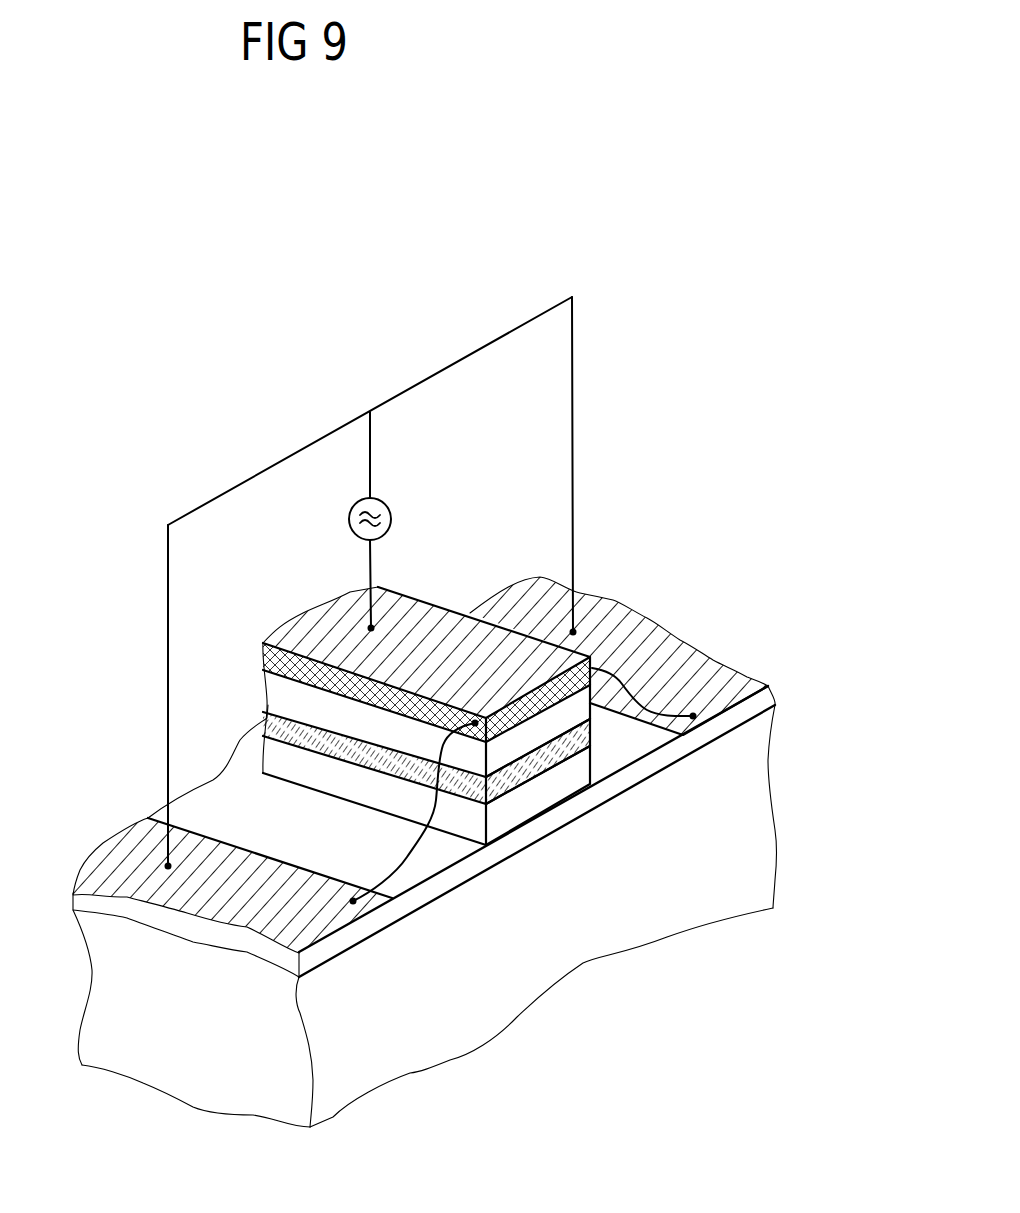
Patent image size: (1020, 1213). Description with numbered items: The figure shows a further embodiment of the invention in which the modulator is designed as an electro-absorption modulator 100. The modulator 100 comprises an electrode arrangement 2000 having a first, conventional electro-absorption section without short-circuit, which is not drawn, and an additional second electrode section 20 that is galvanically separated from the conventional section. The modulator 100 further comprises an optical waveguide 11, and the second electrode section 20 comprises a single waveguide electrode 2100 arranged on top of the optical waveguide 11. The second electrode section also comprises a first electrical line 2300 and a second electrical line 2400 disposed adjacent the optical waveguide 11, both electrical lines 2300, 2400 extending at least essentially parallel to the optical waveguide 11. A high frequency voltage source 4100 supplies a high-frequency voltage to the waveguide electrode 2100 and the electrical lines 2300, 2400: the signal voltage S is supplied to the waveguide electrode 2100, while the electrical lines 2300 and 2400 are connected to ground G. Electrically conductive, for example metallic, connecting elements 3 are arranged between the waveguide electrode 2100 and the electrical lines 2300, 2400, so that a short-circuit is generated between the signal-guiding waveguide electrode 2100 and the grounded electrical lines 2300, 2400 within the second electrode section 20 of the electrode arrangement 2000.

The electro-absorption modulator 100 is at (190, 460).
The high frequency voltage source 4100 is at (373, 500).
The waveguide electrode 2100 is at (413, 620).
The electrode arrangement 2000 is at (247, 661).
The second electrode section 20 is at (662, 598).
The second electrical line 2400 is at (678, 655).
The connecting elements 3 is at (638, 692).
The optical waveguide 11 is at (580, 747).
The first electrical line 2300 is at (275, 908).